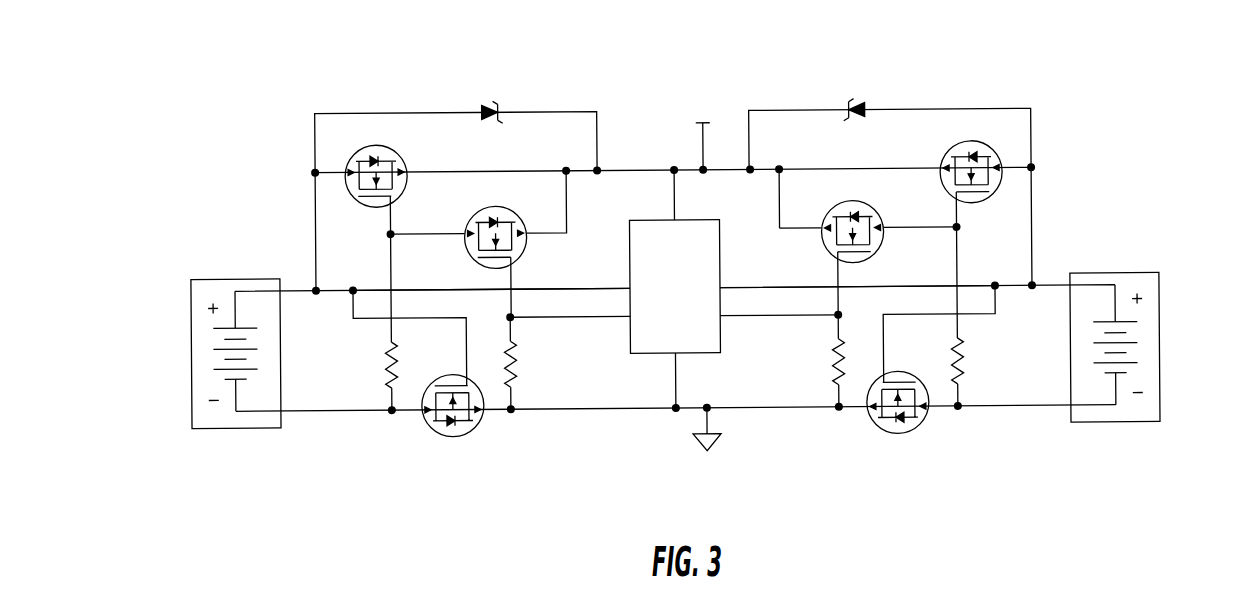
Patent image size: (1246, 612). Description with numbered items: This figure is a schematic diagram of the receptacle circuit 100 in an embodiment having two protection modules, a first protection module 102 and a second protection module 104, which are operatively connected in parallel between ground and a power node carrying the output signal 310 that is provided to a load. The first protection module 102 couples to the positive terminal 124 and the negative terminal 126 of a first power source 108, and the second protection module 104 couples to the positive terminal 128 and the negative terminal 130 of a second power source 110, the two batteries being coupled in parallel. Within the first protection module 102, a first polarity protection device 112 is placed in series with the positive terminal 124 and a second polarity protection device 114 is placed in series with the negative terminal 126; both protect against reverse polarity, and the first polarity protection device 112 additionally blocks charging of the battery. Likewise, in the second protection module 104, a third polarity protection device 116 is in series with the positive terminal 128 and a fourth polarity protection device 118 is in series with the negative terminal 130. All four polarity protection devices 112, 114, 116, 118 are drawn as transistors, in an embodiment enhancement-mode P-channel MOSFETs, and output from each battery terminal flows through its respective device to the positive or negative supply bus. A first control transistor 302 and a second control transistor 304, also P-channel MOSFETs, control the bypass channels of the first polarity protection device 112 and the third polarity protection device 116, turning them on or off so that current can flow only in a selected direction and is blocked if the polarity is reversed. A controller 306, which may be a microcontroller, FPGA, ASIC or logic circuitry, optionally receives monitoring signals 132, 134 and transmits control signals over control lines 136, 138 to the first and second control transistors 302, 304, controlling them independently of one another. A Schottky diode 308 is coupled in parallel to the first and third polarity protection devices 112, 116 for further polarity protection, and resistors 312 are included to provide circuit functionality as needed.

The receptacle circuit 100 is at (995, 50).
The first protection module 102 is at (290, 82).
The second protection module 104 is at (1105, 133).
The first power source 108 is at (203, 276).
The second power source 110 is at (1159, 278).
The first polarity protection device 112 is at (358, 152).
The second polarity protection device 114 is at (440, 432).
The third polarity protection device 116 is at (972, 144).
The fourth polarity protection device 118 is at (906, 433).
The positive terminal of first power source 124 is at (206, 305).
The negative terminal of first power source 126 is at (210, 400).
The positive terminal of second power source 128 is at (1144, 302).
The negative terminal of second power source 130 is at (1137, 398).
The monitoring signal 132 is at (526, 287).
The monitoring signal 134 is at (805, 287).
The control line 136 is at (552, 320).
The control line 138 is at (782, 320).
The first control transistor 302 is at (524, 252).
The second control transistor 304 is at (876, 254).
The controller 306 is at (637, 356).
The Schottky diode 308 is at (484, 108).
The output signal 310 is at (706, 140).
The resistor 312 is at (389, 372).